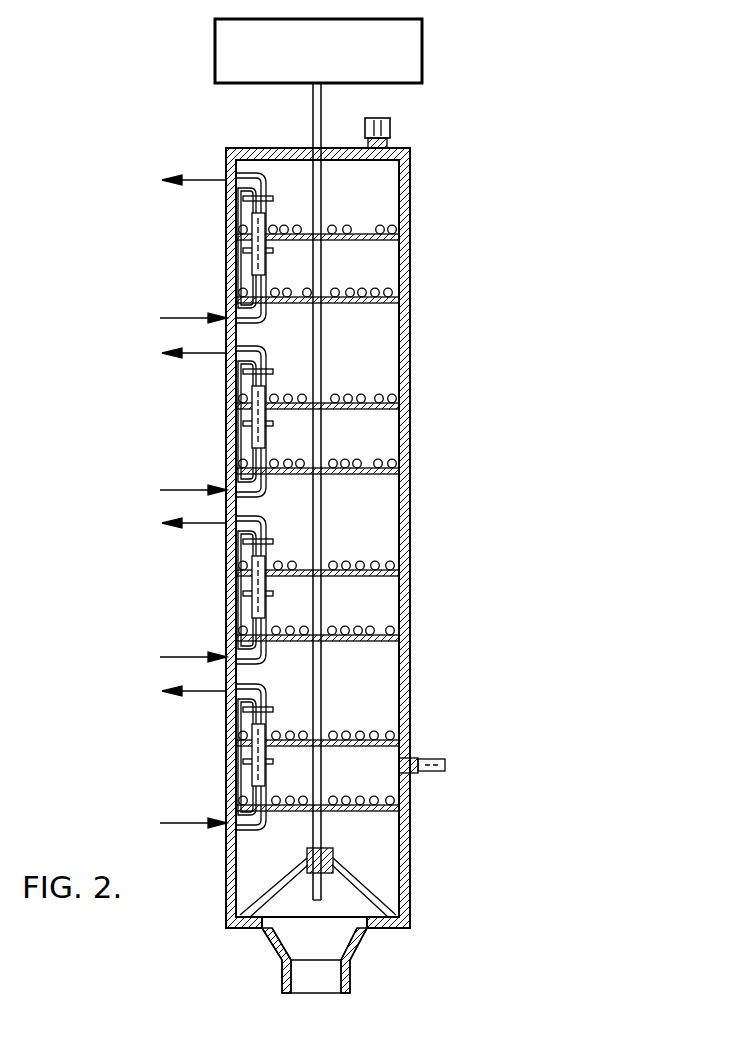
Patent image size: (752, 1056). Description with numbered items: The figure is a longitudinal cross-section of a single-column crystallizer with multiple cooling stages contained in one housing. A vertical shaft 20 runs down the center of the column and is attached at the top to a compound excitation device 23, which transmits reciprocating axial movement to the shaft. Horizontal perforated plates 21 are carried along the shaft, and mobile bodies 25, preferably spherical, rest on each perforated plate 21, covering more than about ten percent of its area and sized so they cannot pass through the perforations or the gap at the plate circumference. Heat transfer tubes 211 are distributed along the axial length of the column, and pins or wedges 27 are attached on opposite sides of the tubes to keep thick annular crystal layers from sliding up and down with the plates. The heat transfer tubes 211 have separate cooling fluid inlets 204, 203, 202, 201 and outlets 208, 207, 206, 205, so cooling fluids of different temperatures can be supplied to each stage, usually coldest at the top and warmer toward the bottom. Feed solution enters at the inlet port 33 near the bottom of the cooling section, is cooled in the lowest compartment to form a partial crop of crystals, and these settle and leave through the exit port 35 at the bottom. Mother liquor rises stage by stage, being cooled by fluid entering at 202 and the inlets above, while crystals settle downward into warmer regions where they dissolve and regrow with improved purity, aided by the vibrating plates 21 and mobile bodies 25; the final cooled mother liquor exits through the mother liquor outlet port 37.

The vertical shaft 20 is at (312, 122).
The perforated plate 21 is at (360, 305).
The compound excitation device 23 is at (328, 66).
The mobile bodies 25 is at (386, 290).
The pins or wedges 27 is at (273, 372).
The inlet port 33 is at (427, 758).
The exit port 35 is at (360, 978).
The mother liquor outlet port 37 is at (390, 128).
The cooling fluid inlet 201 is at (198, 821).
The cooling fluid inlet 202 is at (200, 655).
The cooling fluid inlet 203 is at (195, 488).
The cooling fluid inlet 204 is at (196, 316).
The cooling fluid outlet 205 is at (212, 693).
The cooling fluid outlet 206 is at (205, 525).
The cooling fluid outlet 207 is at (210, 355).
The cooling fluid outlet 208 is at (200, 178).
The heat transfer tubes 211 is at (273, 557).